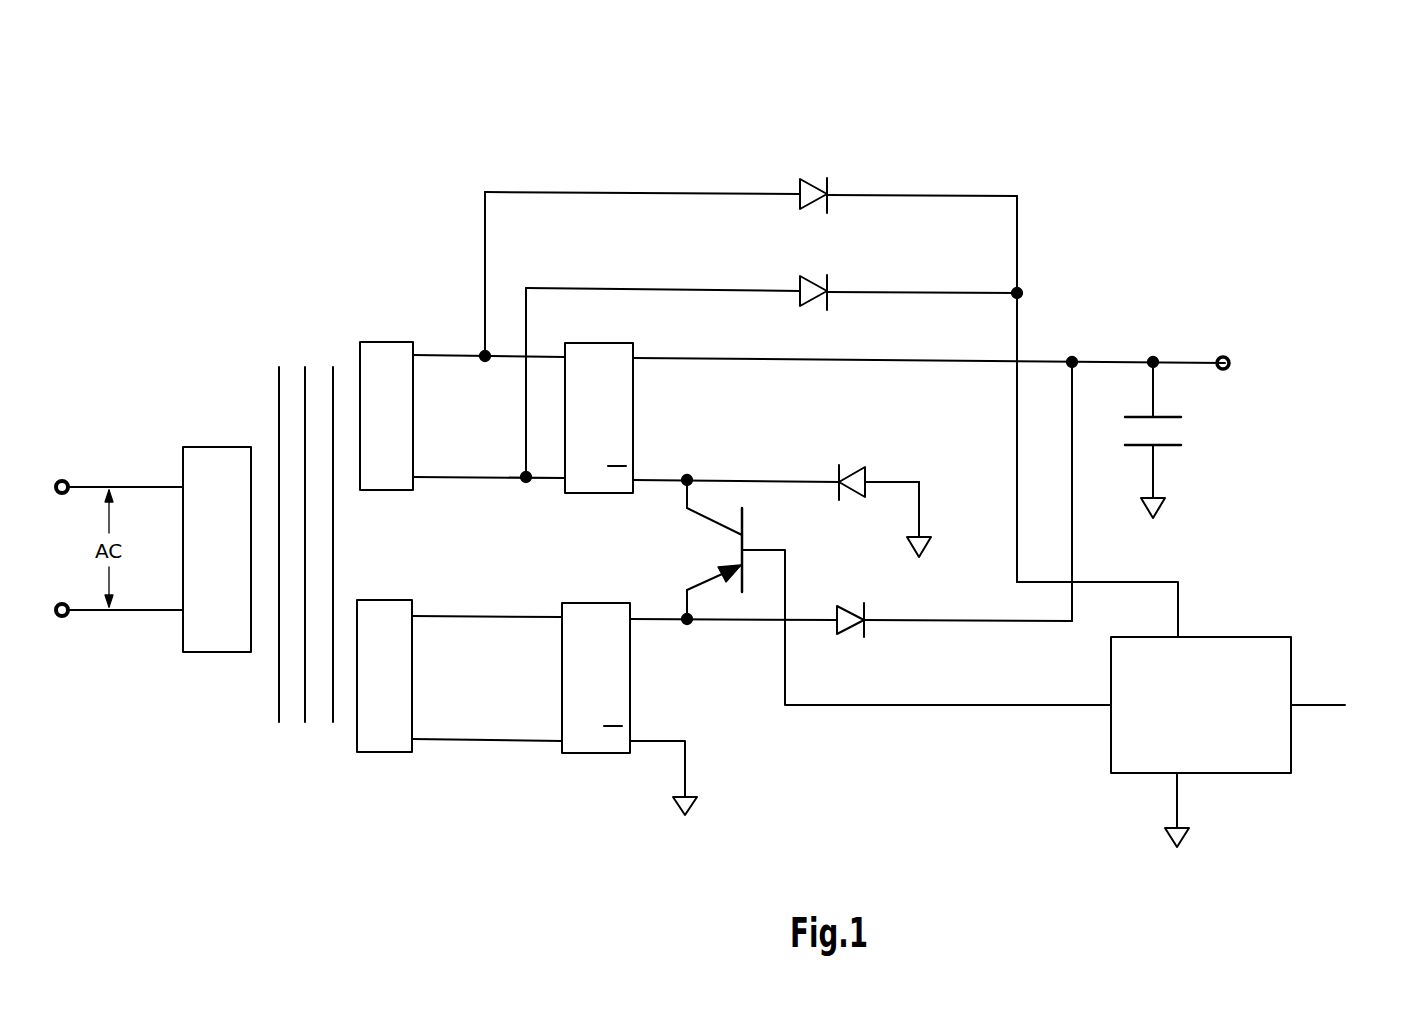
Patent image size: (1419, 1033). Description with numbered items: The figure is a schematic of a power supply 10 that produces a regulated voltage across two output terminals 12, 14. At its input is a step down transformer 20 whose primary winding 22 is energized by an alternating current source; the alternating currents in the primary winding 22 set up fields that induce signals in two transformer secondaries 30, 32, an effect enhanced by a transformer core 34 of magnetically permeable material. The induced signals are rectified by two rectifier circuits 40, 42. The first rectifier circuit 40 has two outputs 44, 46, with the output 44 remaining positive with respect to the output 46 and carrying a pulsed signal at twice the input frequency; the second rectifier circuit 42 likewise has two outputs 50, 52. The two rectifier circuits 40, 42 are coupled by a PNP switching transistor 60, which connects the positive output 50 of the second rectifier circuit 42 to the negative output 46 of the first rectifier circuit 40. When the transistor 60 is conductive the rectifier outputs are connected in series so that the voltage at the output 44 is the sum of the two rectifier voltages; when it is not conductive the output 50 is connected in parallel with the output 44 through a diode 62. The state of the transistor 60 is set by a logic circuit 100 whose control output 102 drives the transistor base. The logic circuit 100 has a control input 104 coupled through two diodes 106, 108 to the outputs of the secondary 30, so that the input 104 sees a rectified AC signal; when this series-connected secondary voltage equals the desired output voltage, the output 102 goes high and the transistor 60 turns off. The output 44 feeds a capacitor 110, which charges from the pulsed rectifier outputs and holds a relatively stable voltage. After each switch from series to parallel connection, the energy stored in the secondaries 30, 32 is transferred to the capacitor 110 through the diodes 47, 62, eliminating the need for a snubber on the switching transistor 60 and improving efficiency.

The power supply 10 is at (568, 822).
The output terminal 12 is at (1229, 358).
The output terminal 14 is at (1155, 474).
The step down transformer 20 is at (310, 568).
The primary winding 22 is at (219, 488).
The transformer secondary 30 is at (380, 367).
The transformer secondary 32 is at (388, 630).
The transformer core 34 is at (304, 386).
The first rectifier circuit 40 is at (586, 372).
The second rectifier circuit 42 is at (586, 626).
The output 44 is at (748, 364).
The output 46 is at (738, 478).
The diode 47 is at (857, 464).
The positive output 50 is at (800, 617).
The output 52 is at (688, 763).
The switching transistor 60 is at (703, 525).
The diode 62 is at (848, 628).
The logic circuit 100 is at (1226, 748).
The control output 102 is at (848, 706).
The control input 104 is at (1125, 582).
The diode 106 is at (815, 185).
The diode 108 is at (811, 281).
The capacitor 110 is at (1170, 431).